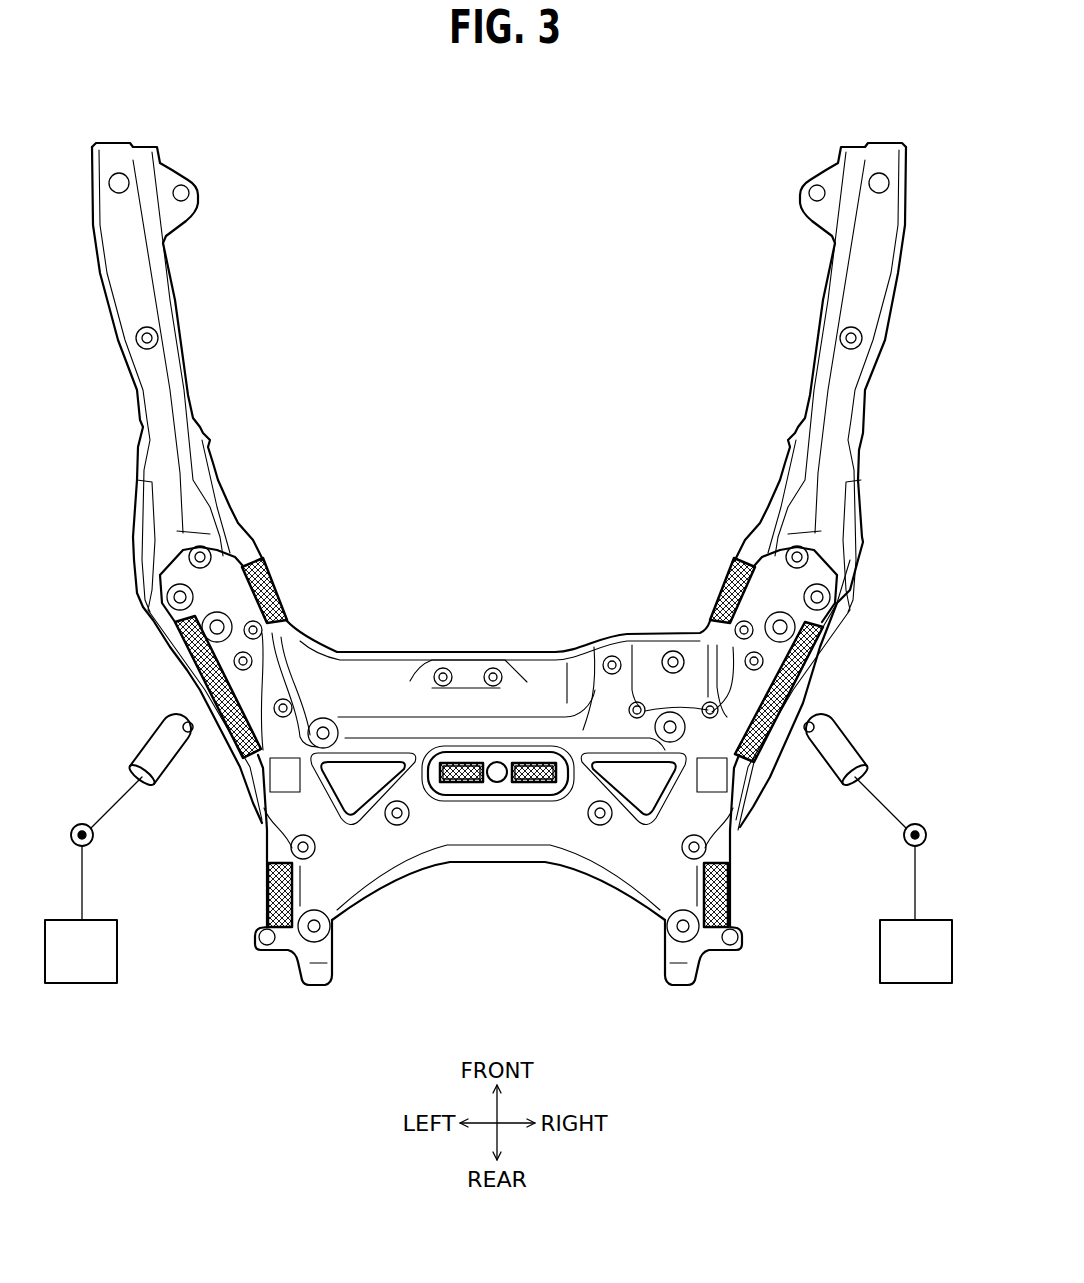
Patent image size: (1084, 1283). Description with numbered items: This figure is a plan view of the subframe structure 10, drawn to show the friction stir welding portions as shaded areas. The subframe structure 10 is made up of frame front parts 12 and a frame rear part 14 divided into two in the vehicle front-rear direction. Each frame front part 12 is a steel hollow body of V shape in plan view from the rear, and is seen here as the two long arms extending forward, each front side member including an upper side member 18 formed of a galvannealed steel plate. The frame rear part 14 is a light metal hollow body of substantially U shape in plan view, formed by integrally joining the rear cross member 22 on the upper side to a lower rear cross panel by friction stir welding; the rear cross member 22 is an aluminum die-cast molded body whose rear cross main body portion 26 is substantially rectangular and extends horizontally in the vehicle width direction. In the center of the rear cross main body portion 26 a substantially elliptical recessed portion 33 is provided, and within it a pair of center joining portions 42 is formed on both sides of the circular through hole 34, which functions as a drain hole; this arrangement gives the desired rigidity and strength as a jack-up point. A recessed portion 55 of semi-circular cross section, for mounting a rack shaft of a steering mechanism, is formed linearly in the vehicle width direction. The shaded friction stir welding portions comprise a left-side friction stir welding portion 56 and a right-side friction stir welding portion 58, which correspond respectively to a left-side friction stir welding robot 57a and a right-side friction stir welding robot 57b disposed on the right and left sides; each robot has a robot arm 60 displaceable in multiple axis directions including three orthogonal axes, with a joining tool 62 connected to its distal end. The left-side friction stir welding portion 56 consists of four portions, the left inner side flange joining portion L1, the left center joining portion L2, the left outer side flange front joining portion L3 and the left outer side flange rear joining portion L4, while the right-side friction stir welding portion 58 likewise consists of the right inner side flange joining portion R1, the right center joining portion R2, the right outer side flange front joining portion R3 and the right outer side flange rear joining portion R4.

The subframe structure 10 is at (685, 98).
The frame front part 12 is at (890, 350).
The frame rear part 14 is at (752, 848).
The upper side member 18 is at (128, 270).
The rear cross member 22 is at (497, 640).
The rear cross main body portion 26 is at (600, 880).
The recessed portion 33 is at (583, 745).
The through hole 34 is at (499, 796).
The center joining portion 42 is at (463, 792).
The recessed portion 55 is at (390, 725).
The left-side friction stir welding portion 56 is at (228, 804).
The right-side friction stir welding portion 58 is at (845, 708).
The robot arm 60 is at (112, 802).
The joining tool 62 is at (145, 735).
The left-side friction stir welding robot 57a is at (80, 985).
The right-side friction stir welding robot 57b is at (917, 985).
The left inner side flange joining portion L1 is at (278, 583).
The left center joining portion L2 is at (467, 757).
The left outer side flange front joining portion L3 is at (173, 668).
The left outer side flange rear joining portion L4 is at (265, 897).
The right inner side flange joining portion R1 is at (719, 583).
The right center joining portion R2 is at (532, 757).
The right outer side flange front joining portion R3 is at (812, 670).
The right outer side flange rear joining portion R4 is at (732, 897).